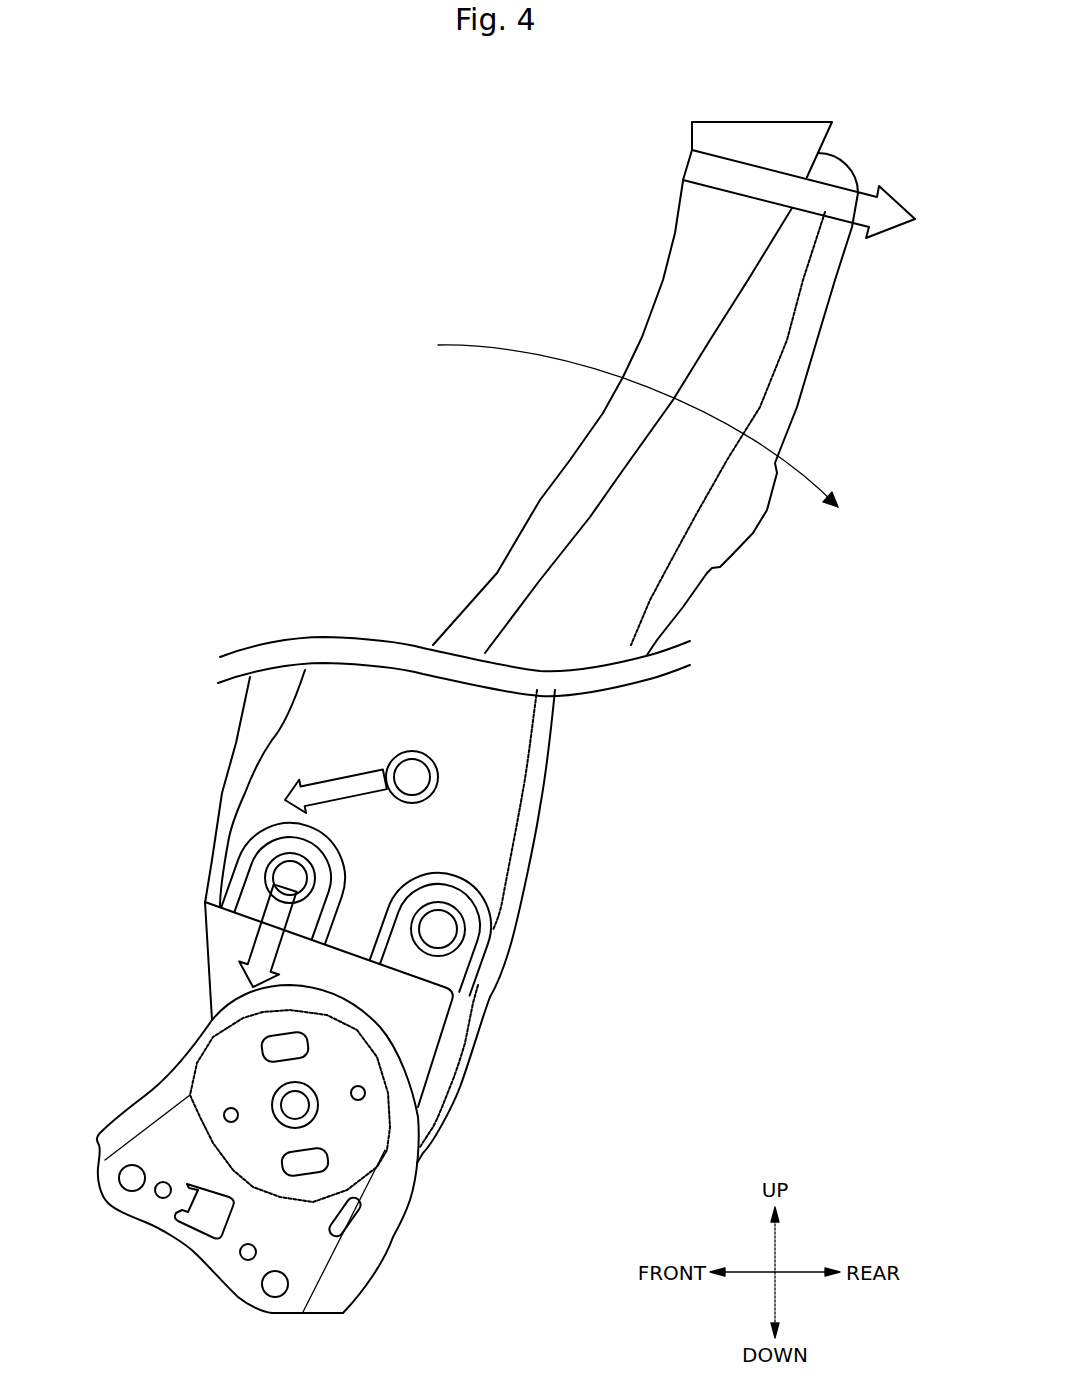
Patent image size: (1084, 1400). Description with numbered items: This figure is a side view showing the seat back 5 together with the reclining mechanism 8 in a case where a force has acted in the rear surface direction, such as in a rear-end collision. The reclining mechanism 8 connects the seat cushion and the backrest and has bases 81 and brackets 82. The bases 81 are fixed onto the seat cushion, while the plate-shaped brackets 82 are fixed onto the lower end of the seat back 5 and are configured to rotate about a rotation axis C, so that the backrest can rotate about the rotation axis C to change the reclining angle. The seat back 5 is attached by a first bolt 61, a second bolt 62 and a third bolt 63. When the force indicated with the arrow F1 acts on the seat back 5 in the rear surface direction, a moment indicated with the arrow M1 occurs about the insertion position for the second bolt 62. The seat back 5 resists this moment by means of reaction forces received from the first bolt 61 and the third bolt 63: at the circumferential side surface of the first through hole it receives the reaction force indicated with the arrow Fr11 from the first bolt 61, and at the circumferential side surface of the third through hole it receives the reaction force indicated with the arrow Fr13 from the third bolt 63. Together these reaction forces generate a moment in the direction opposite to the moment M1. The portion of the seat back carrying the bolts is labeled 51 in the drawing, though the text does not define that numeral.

The seat back 5 is at (768, 122).
The bracket 51 is at (508, 733).
The first bolt 61 is at (288, 874).
The second bolt 62 is at (445, 930).
The third bolt 63 is at (425, 780).
The reclining mechanism 8 is at (178, 1012).
The base 81 is at (363, 1292).
The bracket 82 is at (415, 1033).
The rotation axis C is at (297, 1105).
The force in the rear surface direction F1 is at (835, 197).
The moment M1 is at (796, 468).
The reaction force from the first bolt Fr11 is at (262, 948).
The reaction force from the third bolt Fr13 is at (328, 790).